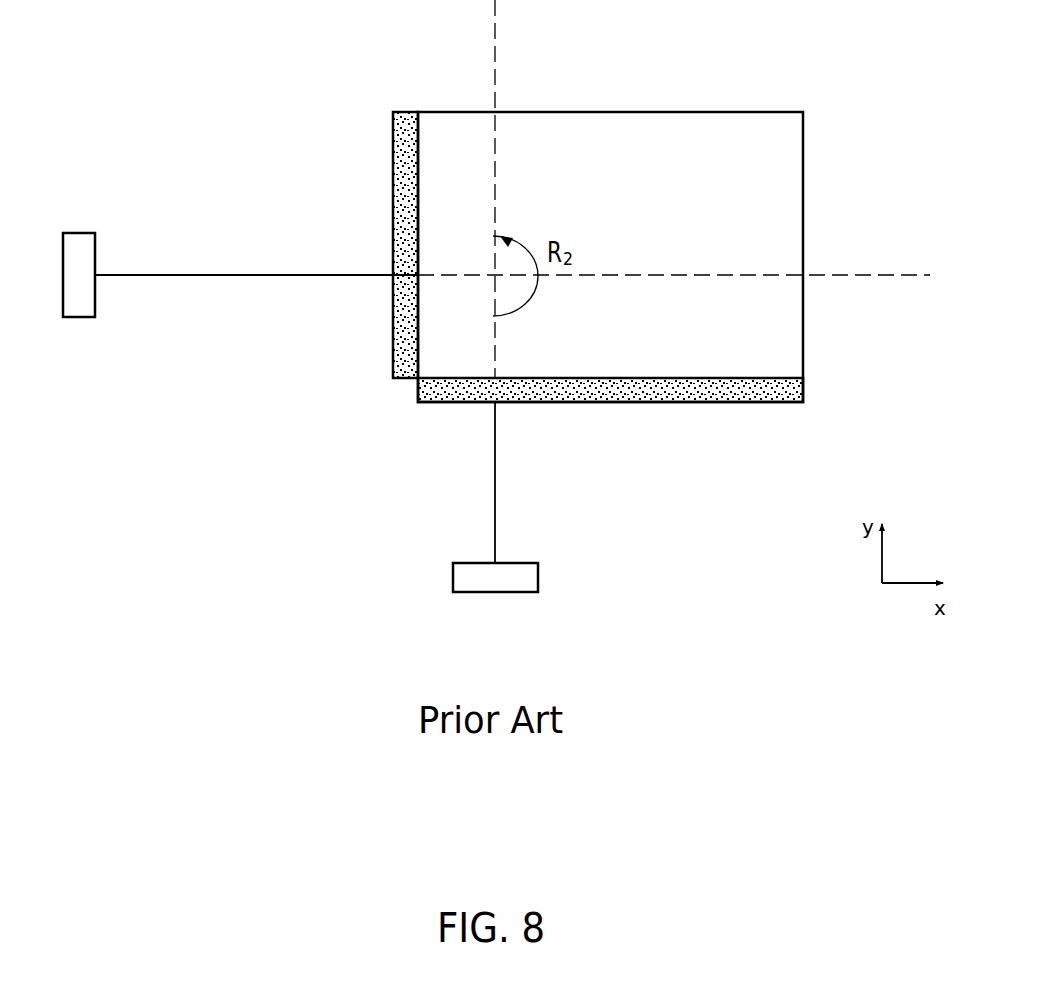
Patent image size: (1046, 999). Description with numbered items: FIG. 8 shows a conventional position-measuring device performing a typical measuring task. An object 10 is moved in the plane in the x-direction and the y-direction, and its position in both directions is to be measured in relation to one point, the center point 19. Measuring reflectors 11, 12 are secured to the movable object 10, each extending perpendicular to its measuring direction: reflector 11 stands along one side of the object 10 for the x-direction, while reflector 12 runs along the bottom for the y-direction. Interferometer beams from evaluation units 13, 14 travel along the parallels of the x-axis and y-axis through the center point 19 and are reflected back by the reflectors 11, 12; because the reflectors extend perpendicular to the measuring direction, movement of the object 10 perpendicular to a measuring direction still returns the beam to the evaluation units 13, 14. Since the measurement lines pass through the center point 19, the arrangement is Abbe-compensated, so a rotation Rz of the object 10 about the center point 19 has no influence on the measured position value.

The object 10 is at (650, 182).
The measuring reflector 11 is at (400, 113).
The measuring reflector 12 is at (805, 390).
The evaluation unit 13 is at (80, 232).
The evaluation unit 14 is at (540, 575).
The center point 19 is at (491, 272).